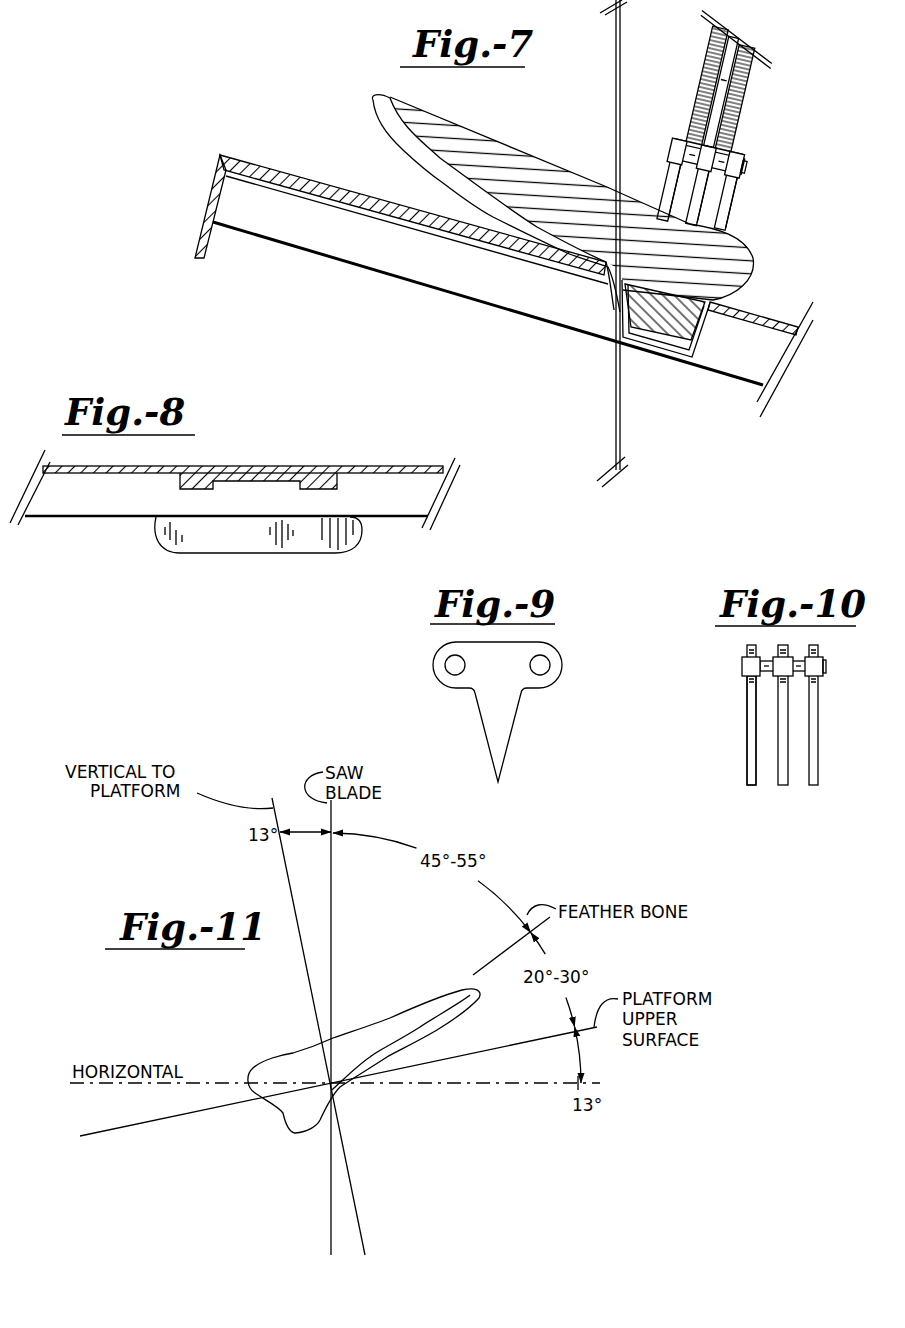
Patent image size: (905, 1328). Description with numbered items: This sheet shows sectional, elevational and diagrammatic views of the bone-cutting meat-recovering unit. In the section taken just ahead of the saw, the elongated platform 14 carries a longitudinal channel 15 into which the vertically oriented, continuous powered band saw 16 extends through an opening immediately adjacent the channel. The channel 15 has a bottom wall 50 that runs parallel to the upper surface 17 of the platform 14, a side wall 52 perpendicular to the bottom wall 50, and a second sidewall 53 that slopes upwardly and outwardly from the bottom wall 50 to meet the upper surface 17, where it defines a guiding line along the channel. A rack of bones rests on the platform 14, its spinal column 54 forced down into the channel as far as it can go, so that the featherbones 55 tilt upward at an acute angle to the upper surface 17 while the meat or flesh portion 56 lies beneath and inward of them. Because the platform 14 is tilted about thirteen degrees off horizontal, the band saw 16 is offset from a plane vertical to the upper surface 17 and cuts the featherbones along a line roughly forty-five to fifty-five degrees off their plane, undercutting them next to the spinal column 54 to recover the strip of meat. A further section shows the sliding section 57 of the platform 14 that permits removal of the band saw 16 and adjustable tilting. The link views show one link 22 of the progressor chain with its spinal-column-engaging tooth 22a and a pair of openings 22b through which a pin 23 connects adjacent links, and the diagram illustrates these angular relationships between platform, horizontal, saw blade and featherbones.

In FIG. 7, the platform 14 is at (279, 166).
In FIG. 8, the platform 14 is at (380, 462).
In FIG. 7, the channel 15 is at (685, 362).
In FIG. 7, the band saw 16 is at (620, 437).
In FIG. 7, the upper surface 17 is at (773, 317).
In FIG. 9, the link 22 is at (490, 686).
In FIG. 10, the link 22 is at (733, 738).
In FIG. 9, the spinal-column-engaging tooth 22a is at (485, 757).
In FIG. 10, the spinal-column-engaging tooth 22a is at (745, 758).
In FIG. 9, the openings 22b is at (445, 660).
In FIG. 10, the pin 23 is at (765, 655).
In FIG. 7, the bottom wall 50 is at (673, 360).
In FIG. 7, the side wall 52 is at (712, 328).
In FIG. 7, the second sidewall 53 is at (613, 313).
In FIG. 7, the spinal column 54 is at (733, 253).
In FIG. 7, the featherbones 55 is at (513, 163).
In FIG. 7, the meat or flesh portion 56 is at (593, 262).
In FIG. 8, the sliding section 57 is at (287, 485).